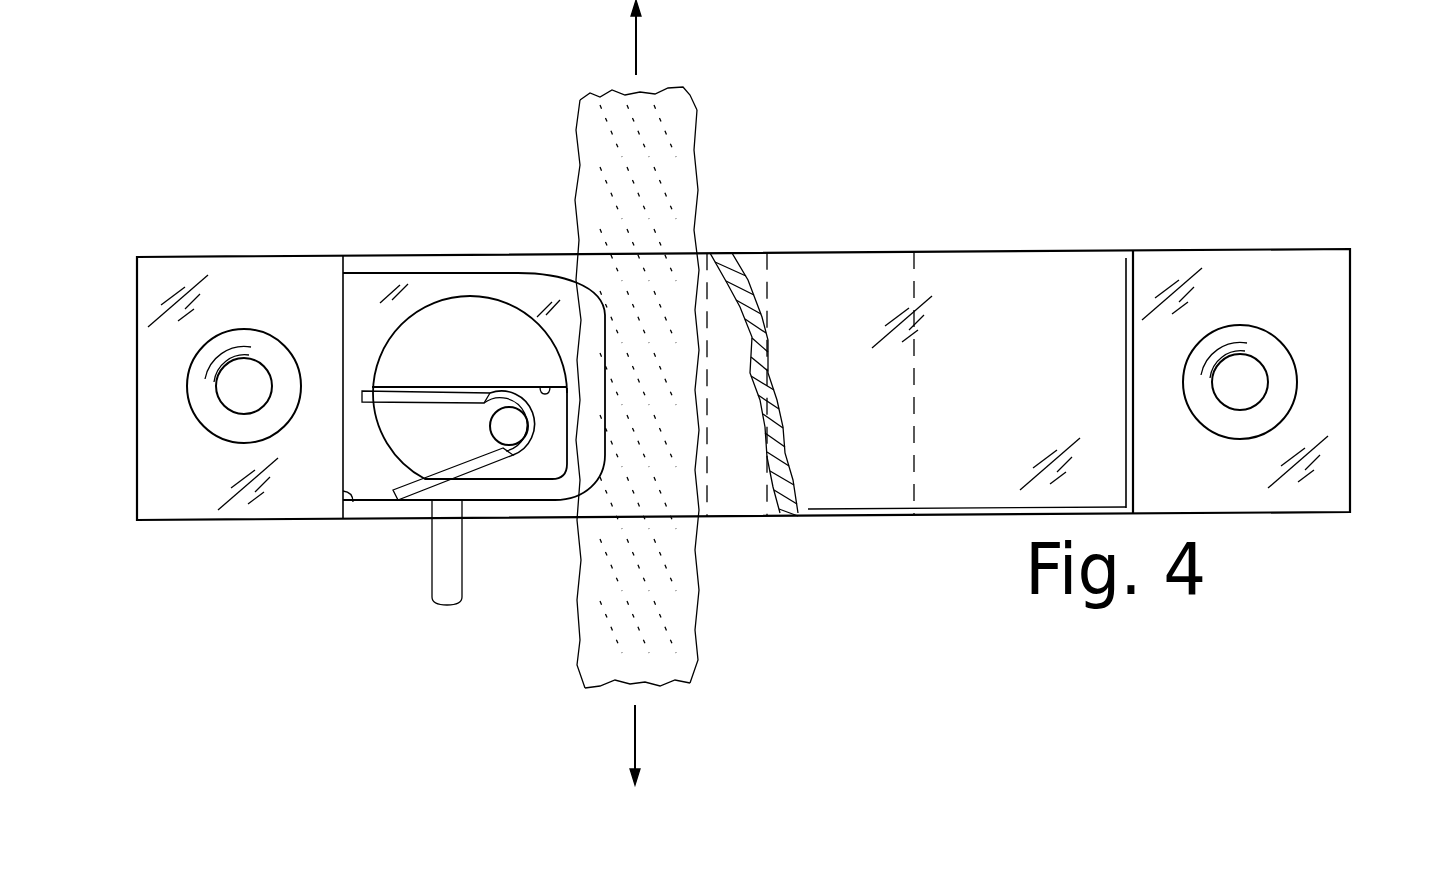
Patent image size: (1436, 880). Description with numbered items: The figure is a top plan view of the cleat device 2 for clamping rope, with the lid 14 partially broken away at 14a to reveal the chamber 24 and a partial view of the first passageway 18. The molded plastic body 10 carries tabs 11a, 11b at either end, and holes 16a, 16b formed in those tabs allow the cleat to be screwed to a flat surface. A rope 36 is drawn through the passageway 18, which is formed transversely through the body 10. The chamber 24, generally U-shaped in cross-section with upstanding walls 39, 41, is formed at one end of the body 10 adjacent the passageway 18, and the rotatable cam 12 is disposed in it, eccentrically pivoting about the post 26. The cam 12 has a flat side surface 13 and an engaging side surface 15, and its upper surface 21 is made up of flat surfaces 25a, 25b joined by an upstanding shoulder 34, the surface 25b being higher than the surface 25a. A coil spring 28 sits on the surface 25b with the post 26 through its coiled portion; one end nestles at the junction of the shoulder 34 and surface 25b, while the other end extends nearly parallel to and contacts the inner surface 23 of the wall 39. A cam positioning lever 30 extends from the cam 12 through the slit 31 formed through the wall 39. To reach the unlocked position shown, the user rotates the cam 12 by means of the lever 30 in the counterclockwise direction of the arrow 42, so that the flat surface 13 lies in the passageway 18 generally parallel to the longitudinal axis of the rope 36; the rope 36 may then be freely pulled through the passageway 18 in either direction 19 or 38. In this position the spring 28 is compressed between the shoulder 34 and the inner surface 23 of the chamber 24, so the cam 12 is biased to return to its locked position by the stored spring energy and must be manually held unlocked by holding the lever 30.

The cleat device 2 is at (952, 610).
The body 10 is at (743, 497).
The tab 11a is at (1338, 483).
The tab 11b is at (158, 492).
The rotatable cam 12 is at (457, 292).
The flat side surface 13 is at (560, 478).
The lid 14 is at (986, 286).
The broken-away portion of lid 14a is at (760, 328).
The engaging side surface 15 is at (500, 305).
The hole 16a is at (1233, 325).
The hole 16b is at (232, 332).
The first passageway 18 is at (700, 517).
The direction 19 is at (637, 33).
The upper surface 21 is at (378, 324).
The inner surface 23 is at (347, 492).
The chamber 24 is at (388, 283).
The flat surface 25a is at (470, 433).
The flat surface 25b is at (469, 356).
The post 26 is at (497, 452).
The coil spring 28 is at (400, 502).
The cam positioning lever 30 is at (448, 592).
The slit 31 is at (367, 512).
The shoulder 34 is at (540, 385).
The rope 36 is at (688, 172).
The direction 38 is at (637, 745).
The upstanding wall 39 is at (423, 512).
The upstanding wall 41 is at (440, 264).
The arrow 42 is at (361, 452).